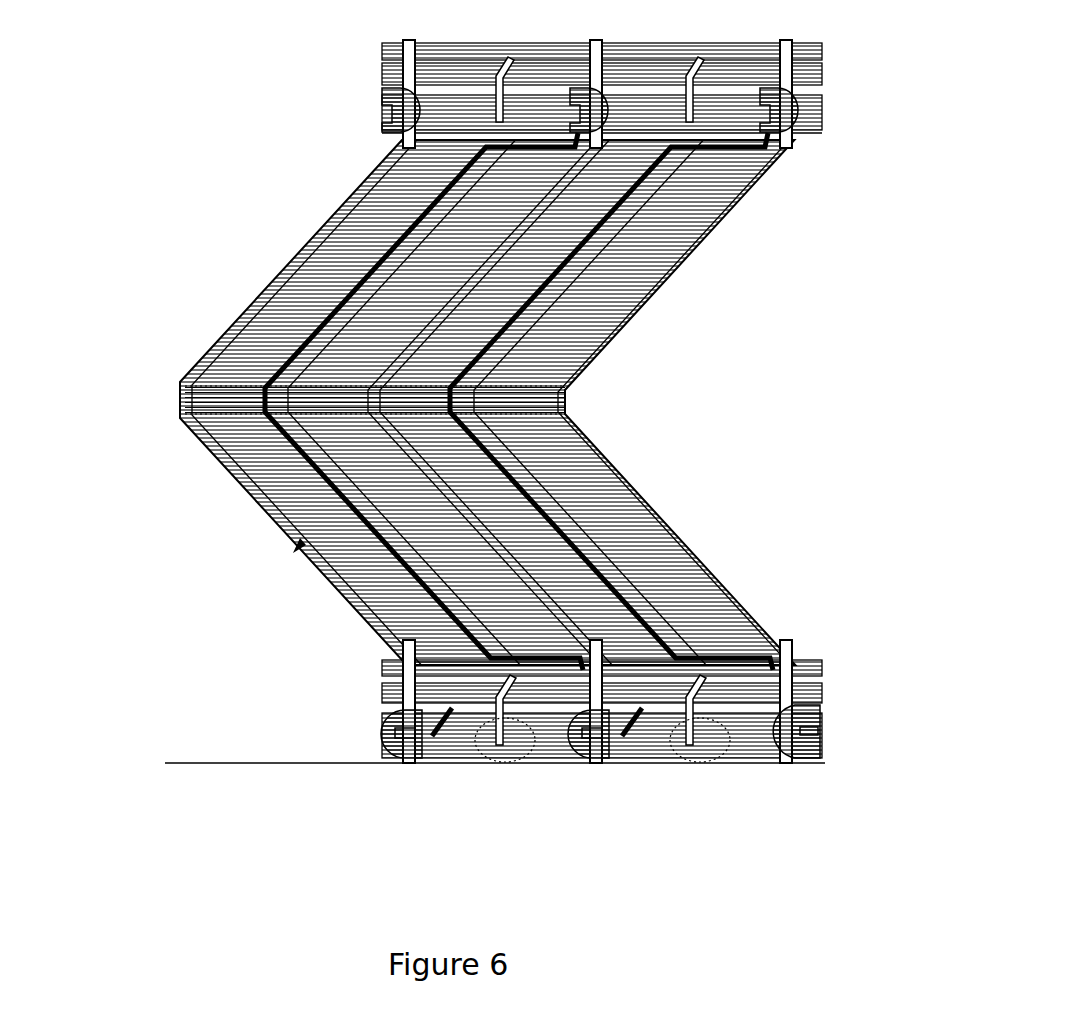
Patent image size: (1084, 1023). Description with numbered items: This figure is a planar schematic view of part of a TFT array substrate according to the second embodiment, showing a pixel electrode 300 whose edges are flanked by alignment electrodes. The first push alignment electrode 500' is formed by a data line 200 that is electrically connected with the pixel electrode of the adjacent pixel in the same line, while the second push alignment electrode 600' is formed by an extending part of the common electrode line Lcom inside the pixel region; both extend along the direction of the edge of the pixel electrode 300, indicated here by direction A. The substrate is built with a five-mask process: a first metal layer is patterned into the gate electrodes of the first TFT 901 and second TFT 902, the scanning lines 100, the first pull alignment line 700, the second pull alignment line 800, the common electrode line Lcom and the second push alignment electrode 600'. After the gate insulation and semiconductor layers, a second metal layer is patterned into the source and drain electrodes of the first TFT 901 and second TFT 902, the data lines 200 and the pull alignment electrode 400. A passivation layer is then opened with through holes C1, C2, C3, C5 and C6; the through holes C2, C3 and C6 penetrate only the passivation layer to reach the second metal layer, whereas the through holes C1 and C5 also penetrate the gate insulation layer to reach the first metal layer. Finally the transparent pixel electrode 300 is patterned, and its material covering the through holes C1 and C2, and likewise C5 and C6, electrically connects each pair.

The scanning lines 100 is at (822, 732).
The data lines 200 is at (362, 680).
The pixel electrode 300 is at (318, 231).
The pull alignment electrode 400 is at (270, 287).
The first push alignment electrode 500' is at (491, 401).
The second push alignment electrode 600' is at (475, 402).
The first pull alignment line 700 is at (822, 690).
The second pull alignment line 800 is at (822, 662).
The first TFT 901 is at (378, 740).
The second TFT 902 is at (500, 765).
The through hole C1 is at (574, 763).
The through hole C2 is at (525, 763).
The through hole C3 is at (447, 760).
The through hole C5 is at (766, 622).
The through hole C6 is at (748, 600).
The common electrode line Lcom is at (180, 386).
The direction A is at (285, 559).